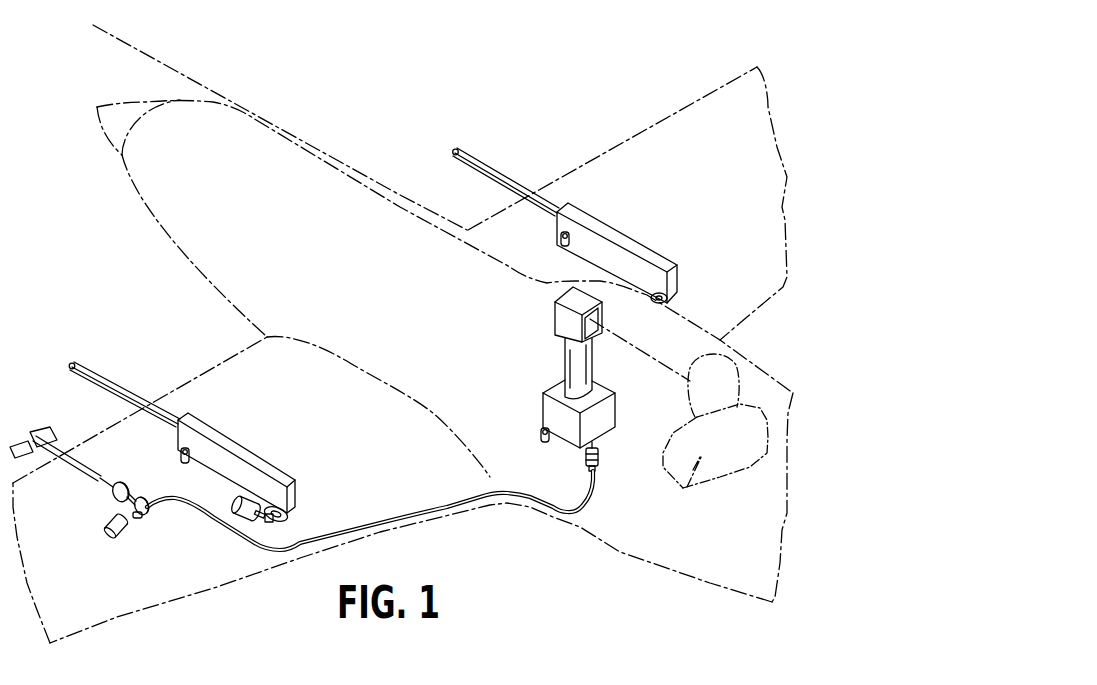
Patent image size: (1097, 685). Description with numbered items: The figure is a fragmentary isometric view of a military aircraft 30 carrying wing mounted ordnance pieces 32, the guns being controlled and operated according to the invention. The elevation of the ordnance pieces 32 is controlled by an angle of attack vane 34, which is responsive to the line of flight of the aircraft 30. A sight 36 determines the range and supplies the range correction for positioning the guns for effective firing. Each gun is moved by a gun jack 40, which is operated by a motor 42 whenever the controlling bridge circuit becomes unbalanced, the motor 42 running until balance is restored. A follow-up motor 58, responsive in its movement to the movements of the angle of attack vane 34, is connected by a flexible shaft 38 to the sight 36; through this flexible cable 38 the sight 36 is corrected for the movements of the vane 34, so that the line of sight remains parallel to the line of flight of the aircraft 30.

The aircraft 30 is at (662, 137).
The wing mounted ordnance pieces 32 is at (505, 180).
The angle of attack vane 34 is at (45, 428).
The sight 36 is at (573, 367).
The flexible shaft 38 is at (360, 527).
The gun jack 40 is at (289, 511).
The motor 42 is at (233, 497).
The follow-up motor 58 is at (111, 521).